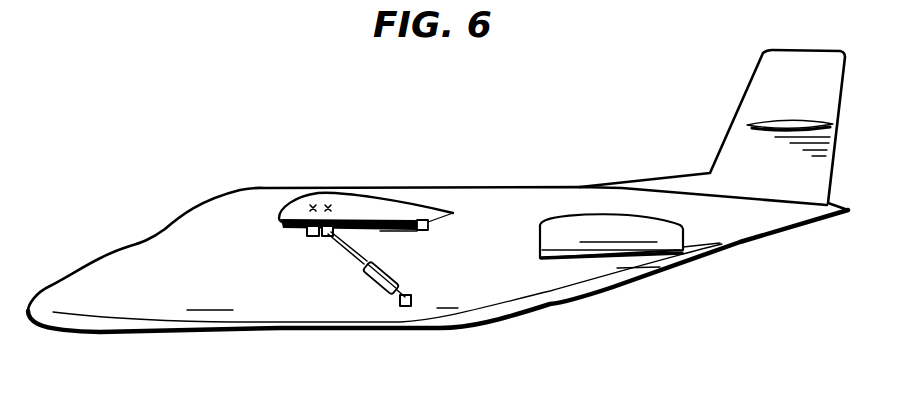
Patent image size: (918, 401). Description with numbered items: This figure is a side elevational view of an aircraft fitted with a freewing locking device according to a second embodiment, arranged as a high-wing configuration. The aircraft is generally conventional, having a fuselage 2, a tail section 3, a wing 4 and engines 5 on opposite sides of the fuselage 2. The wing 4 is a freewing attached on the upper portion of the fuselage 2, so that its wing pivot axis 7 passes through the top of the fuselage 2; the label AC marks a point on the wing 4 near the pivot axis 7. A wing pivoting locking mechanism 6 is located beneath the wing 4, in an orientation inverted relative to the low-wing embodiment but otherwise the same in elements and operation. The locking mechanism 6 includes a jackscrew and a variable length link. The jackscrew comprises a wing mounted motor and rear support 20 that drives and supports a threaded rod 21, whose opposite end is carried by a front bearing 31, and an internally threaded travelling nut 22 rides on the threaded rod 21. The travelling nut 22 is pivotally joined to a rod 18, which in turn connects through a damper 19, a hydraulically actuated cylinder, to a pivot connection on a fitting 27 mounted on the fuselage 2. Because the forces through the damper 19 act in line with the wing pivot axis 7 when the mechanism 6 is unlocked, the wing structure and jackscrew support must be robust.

The fuselage 2 is at (570, 186).
The tail section 3 is at (768, 121).
The wing 4 is at (428, 203).
The engines 5 is at (582, 255).
The locking means 6 is at (358, 262).
The wing pivot axis 7 is at (314, 206).
The aerodynamic center AC is at (329, 206).
The rod 18 is at (329, 238).
The damper 19 is at (389, 293).
The wing mounted motor and rear support 20 is at (429, 233).
The threaded rod 21 is at (398, 233).
The travelling nut 22 is at (313, 238).
The fitting 27 is at (413, 301).
The front bearing 31 is at (307, 235).